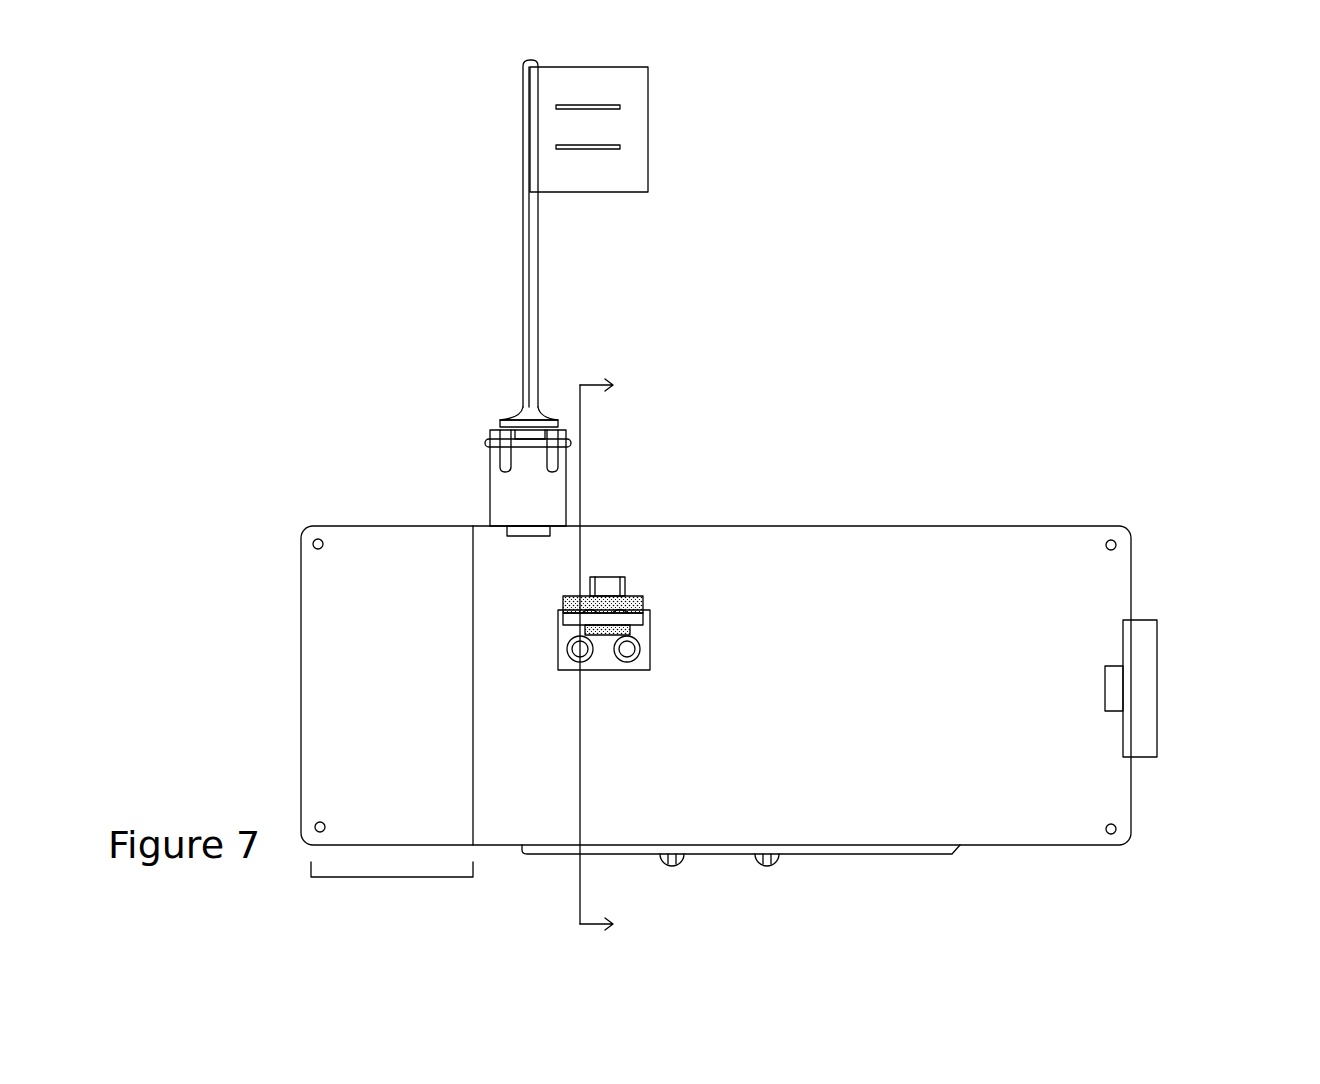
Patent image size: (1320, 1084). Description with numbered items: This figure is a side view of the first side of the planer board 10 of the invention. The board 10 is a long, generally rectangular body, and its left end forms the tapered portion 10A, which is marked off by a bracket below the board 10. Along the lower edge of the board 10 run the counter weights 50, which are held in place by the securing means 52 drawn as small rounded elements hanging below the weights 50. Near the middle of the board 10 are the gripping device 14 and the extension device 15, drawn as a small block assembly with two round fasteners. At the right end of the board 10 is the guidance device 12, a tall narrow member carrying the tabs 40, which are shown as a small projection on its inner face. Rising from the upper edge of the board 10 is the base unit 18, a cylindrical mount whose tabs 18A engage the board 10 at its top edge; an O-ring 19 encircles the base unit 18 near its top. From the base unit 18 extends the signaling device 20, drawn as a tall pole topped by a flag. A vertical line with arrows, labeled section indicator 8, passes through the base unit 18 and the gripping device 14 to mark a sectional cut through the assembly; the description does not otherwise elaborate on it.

The planer board 10 is at (322, 683).
The tapered portion 10A is at (393, 877).
The guidance device 12 is at (1144, 667).
The gripping device 14 is at (640, 595).
The extension device 15 is at (647, 650).
The base unit 18 is at (500, 488).
The tabs 18A is at (567, 525).
The O-ring 19 is at (485, 441).
The signaling device 20 is at (523, 298).
The tabs 40 is at (1115, 687).
The counter weights 50 is at (957, 850).
The securing means 52 is at (757, 862).
The section line 8- 8 is at (607, 646).